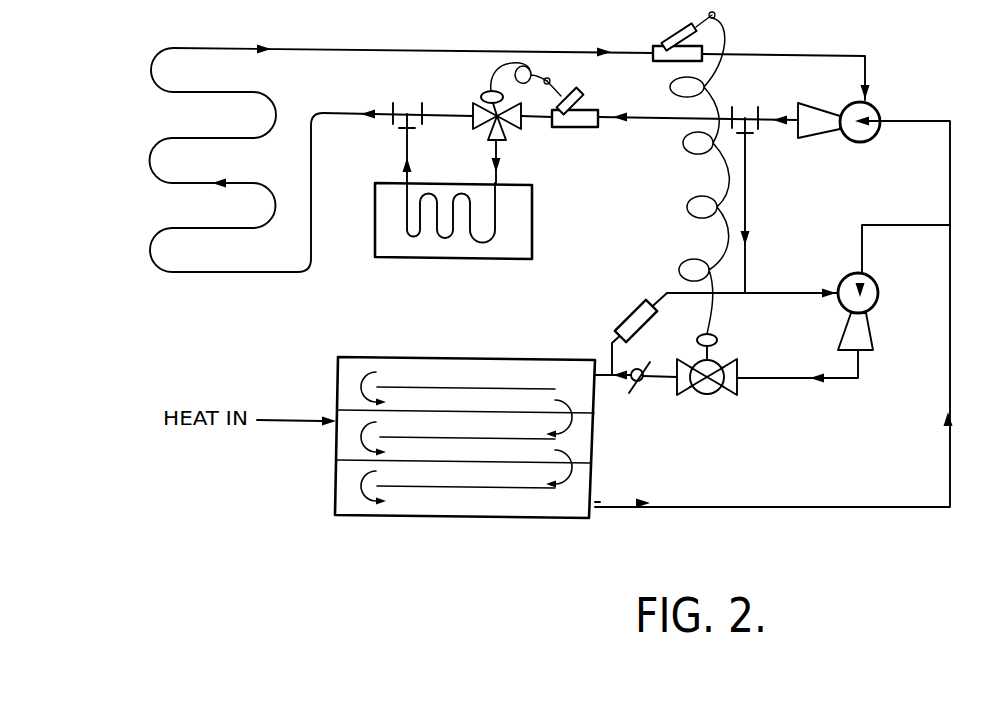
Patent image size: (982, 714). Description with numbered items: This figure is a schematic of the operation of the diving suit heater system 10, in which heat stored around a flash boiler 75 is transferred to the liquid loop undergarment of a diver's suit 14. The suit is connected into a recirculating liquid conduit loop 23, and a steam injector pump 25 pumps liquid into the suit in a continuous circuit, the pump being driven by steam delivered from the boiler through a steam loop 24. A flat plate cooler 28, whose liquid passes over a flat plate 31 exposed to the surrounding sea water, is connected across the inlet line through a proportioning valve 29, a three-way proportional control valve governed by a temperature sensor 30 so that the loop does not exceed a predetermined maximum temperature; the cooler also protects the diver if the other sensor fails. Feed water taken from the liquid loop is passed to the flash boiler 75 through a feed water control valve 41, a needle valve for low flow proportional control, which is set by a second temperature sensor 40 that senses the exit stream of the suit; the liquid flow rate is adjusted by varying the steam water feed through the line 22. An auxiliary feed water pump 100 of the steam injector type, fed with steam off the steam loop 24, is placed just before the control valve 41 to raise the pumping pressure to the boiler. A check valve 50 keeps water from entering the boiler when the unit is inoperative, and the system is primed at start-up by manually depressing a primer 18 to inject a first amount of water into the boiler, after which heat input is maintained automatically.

The diving suit heater system 10 is at (106, 193).
The diver's suit 14 is at (239, 138).
The primer 18 is at (624, 314).
The line 22 is at (757, 205).
The recirculating liquid conduit loop 23 is at (798, 56).
The steam loop 24 is at (948, 454).
The steam injector pump 25 is at (872, 108).
The flat plate cooler 28 is at (375, 228).
The proportioning valve 29 is at (504, 127).
The temperature sensor 30 is at (584, 98).
The flat plate 31 is at (493, 214).
The temperature sensor 40 is at (656, 46).
The feed water control valve 41 is at (713, 365).
The check valve 50 is at (646, 368).
The flash boiler 75 is at (592, 440).
The auxiliary feed water pump 100 is at (867, 322).